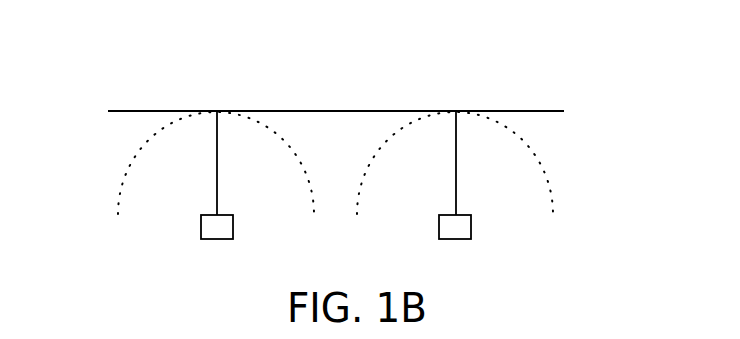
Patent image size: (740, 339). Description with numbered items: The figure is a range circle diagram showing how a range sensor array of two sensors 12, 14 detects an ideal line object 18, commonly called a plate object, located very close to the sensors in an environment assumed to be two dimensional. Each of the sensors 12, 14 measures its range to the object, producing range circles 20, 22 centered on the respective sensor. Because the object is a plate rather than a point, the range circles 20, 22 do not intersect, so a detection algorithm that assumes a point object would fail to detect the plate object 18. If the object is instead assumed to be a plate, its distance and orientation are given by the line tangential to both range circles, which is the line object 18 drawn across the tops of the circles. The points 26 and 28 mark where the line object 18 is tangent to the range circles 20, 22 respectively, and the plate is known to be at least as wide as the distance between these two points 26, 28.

The sensor 12 is at (227, 228).
The sensor 14 is at (465, 227).
The line object 18 is at (539, 111).
The range circle 20 is at (127, 166).
The range circle 22 is at (543, 166).
The tangent point 26 is at (217, 110).
The tangent point 28 is at (456, 110).